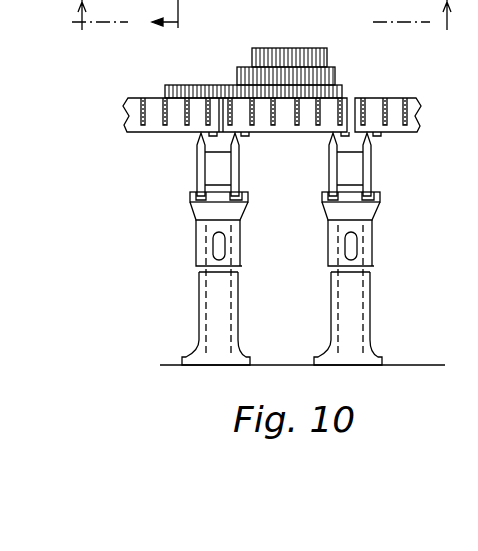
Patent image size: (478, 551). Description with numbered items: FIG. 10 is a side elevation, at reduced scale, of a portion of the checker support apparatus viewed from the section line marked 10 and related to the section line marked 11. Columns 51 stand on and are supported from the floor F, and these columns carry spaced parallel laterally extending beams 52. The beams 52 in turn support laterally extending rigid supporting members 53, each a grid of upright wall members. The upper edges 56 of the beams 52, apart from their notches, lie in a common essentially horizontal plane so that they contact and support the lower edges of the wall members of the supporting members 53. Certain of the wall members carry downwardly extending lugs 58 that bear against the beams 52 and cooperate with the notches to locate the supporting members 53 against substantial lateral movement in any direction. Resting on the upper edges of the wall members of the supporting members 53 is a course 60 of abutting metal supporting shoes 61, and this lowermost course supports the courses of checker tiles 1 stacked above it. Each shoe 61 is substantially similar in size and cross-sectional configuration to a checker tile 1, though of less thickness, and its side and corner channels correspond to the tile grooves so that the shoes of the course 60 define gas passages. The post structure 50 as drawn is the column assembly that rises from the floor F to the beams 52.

The side groove 10 is at (262, 15).
The corner groove 11 is at (179, 16).
The course of supporting shoes 60 is at (165, 92).
The supporting shoe 61 is at (183, 86).
The checker tile 1 is at (237, 75).
The supporting member 53 is at (277, 97).
The upper edge of beam 56 is at (372, 134).
The beam 52 is at (196, 161).
The lug 58 is at (240, 152).
The support post 50 is at (188, 237).
The column 51 is at (198, 312).
The floor F is at (410, 365).